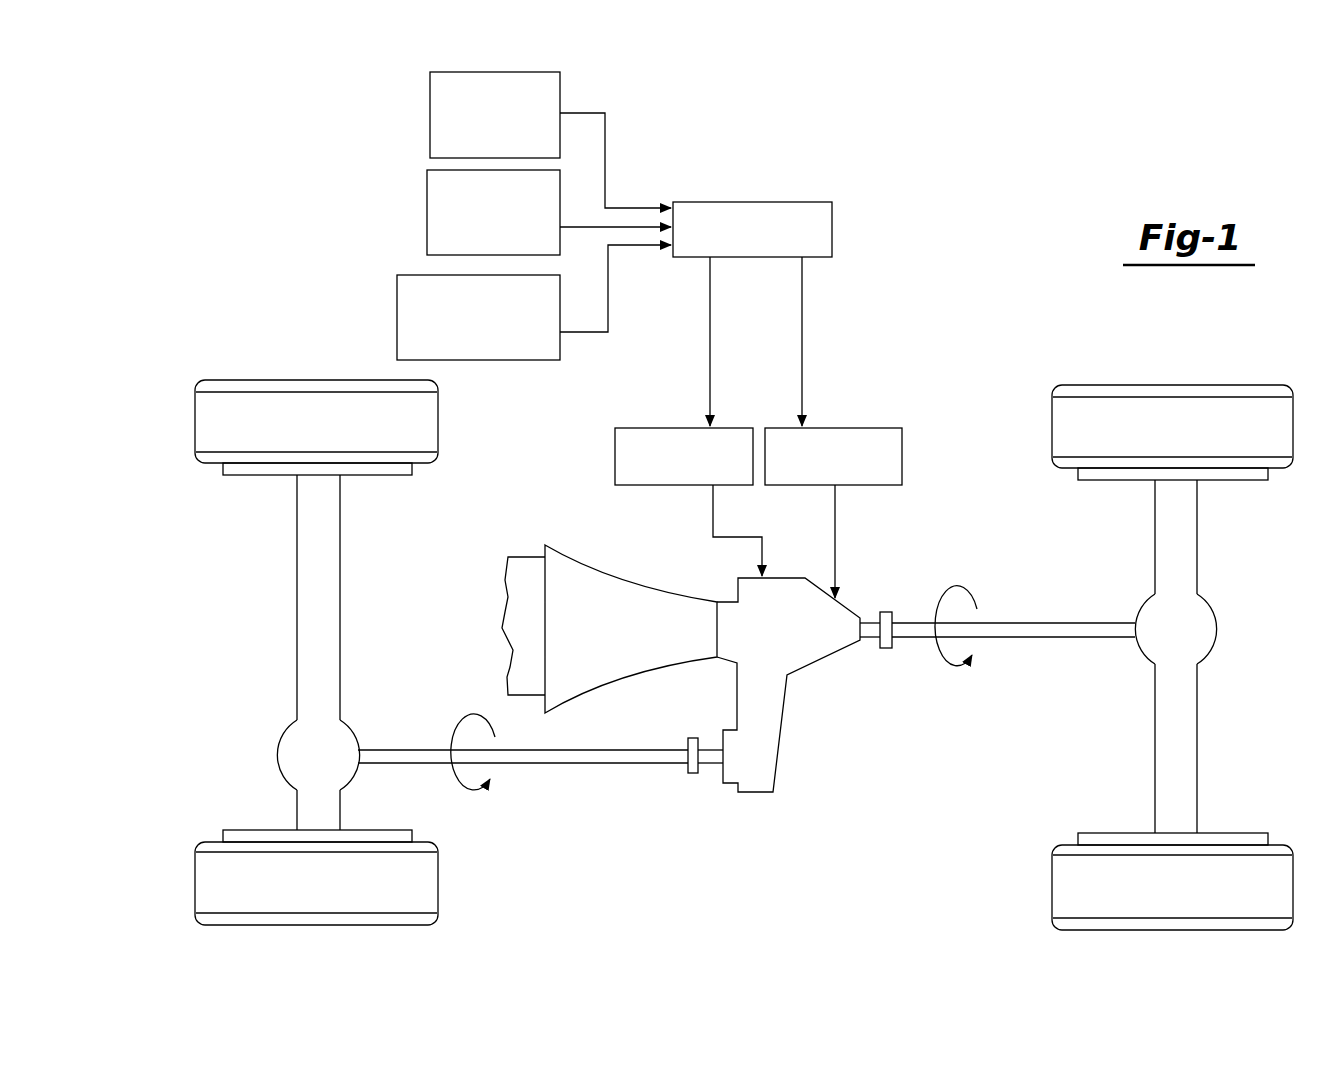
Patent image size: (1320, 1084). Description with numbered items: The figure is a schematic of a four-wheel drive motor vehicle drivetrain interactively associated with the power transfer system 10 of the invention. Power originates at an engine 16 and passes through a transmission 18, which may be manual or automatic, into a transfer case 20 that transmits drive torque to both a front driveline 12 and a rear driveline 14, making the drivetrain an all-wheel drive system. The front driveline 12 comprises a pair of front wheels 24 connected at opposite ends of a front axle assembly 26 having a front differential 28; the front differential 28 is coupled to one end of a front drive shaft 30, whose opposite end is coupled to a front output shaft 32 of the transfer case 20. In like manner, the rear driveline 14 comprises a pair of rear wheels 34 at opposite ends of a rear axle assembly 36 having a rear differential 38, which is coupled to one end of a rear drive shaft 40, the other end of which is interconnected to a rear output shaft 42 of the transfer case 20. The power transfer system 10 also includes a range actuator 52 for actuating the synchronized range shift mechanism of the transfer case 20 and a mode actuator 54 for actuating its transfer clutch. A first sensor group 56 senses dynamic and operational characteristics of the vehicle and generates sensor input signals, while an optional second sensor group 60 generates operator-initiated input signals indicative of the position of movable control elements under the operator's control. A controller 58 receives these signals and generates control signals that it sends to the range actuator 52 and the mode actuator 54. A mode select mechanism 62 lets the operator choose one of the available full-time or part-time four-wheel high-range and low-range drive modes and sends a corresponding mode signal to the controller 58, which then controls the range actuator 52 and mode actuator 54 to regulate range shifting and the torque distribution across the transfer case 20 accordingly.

The power transfer system 10 is at (924, 270).
The front driveline 12 is at (367, 639).
The rear driveline 14 is at (1071, 586).
The engine 16 is at (520, 602).
The transmission 18 is at (642, 647).
The transfer case 20 is at (824, 664).
The front wheels 24 is at (253, 418).
The front axle assembly 26 is at (314, 546).
The front differential 28 is at (297, 733).
The front drive shaft 30 is at (645, 762).
The front output shaft 32 is at (708, 763).
The rear wheels 34 is at (1122, 442).
The rear axle assembly 36 is at (1173, 527).
The rear differential 38 is at (1190, 623).
The rear drive shaft 40 is at (1072, 637).
The rear output shaft 42 is at (872, 610).
The range actuator 52 is at (660, 485).
The mode actuator 54 is at (902, 435).
The first sensor group 56 is at (430, 113).
The controller 58 is at (768, 202).
The second sensor group 60 is at (427, 222).
The mode select mechanism 62 is at (526, 360).